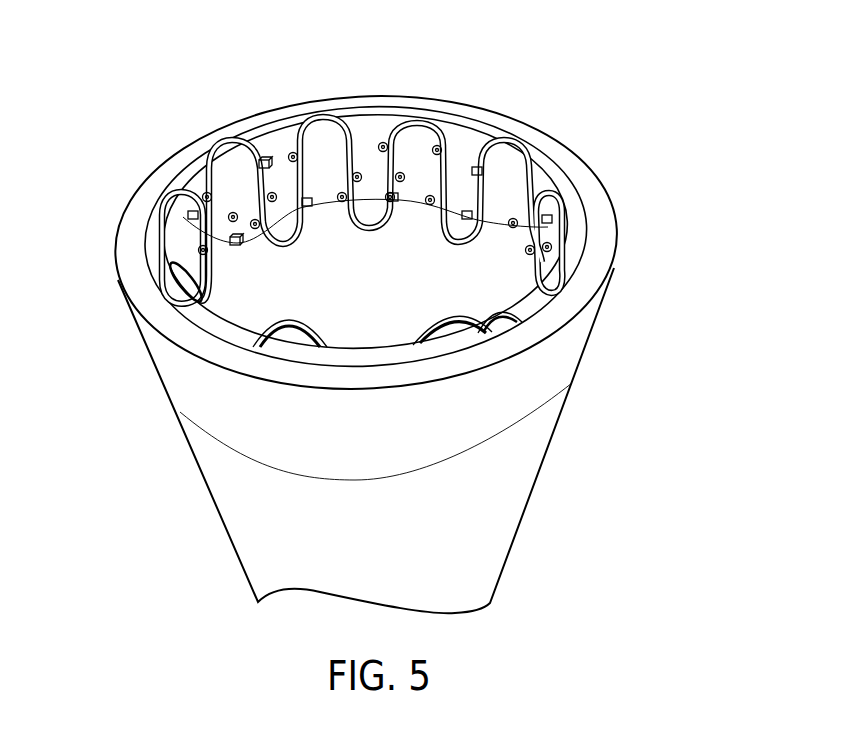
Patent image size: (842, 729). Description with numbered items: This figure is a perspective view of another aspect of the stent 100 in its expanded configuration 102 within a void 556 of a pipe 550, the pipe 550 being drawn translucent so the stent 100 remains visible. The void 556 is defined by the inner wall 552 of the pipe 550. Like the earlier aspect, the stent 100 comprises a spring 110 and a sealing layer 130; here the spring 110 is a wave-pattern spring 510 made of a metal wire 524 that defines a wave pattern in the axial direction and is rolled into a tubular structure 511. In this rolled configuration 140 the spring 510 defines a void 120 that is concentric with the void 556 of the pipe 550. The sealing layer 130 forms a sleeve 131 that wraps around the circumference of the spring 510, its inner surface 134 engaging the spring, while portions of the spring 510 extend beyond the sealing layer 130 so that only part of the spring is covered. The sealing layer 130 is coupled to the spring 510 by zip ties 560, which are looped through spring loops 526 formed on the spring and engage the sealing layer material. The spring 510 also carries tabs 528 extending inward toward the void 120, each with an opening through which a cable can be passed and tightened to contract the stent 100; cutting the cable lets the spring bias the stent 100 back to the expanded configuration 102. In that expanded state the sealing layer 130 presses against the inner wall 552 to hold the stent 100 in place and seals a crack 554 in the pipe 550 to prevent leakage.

The stent 100 is at (310, 76).
The expanded configuration 102 is at (630, 222).
The spring 110 is at (330, 343).
The void 120 is at (308, 287).
The sealing layer 130 is at (205, 320).
The tubular sleeve structure 131 is at (372, 127).
The inner surface 134 is at (507, 163).
The rolled configuration 140 is at (615, 180).
The wave-pattern spring 510 is at (507, 310).
The tubular structure 511 is at (333, 117).
The metal wire 524 is at (283, 330).
The spring loops 526 is at (431, 124).
The tabs 528 is at (233, 238).
The pipe 550 is at (523, 477).
The inner wall 552 is at (450, 277).
The crack 554 is at (380, 413).
The void 556 is at (437, 300).
The zip ties 560 is at (264, 166).